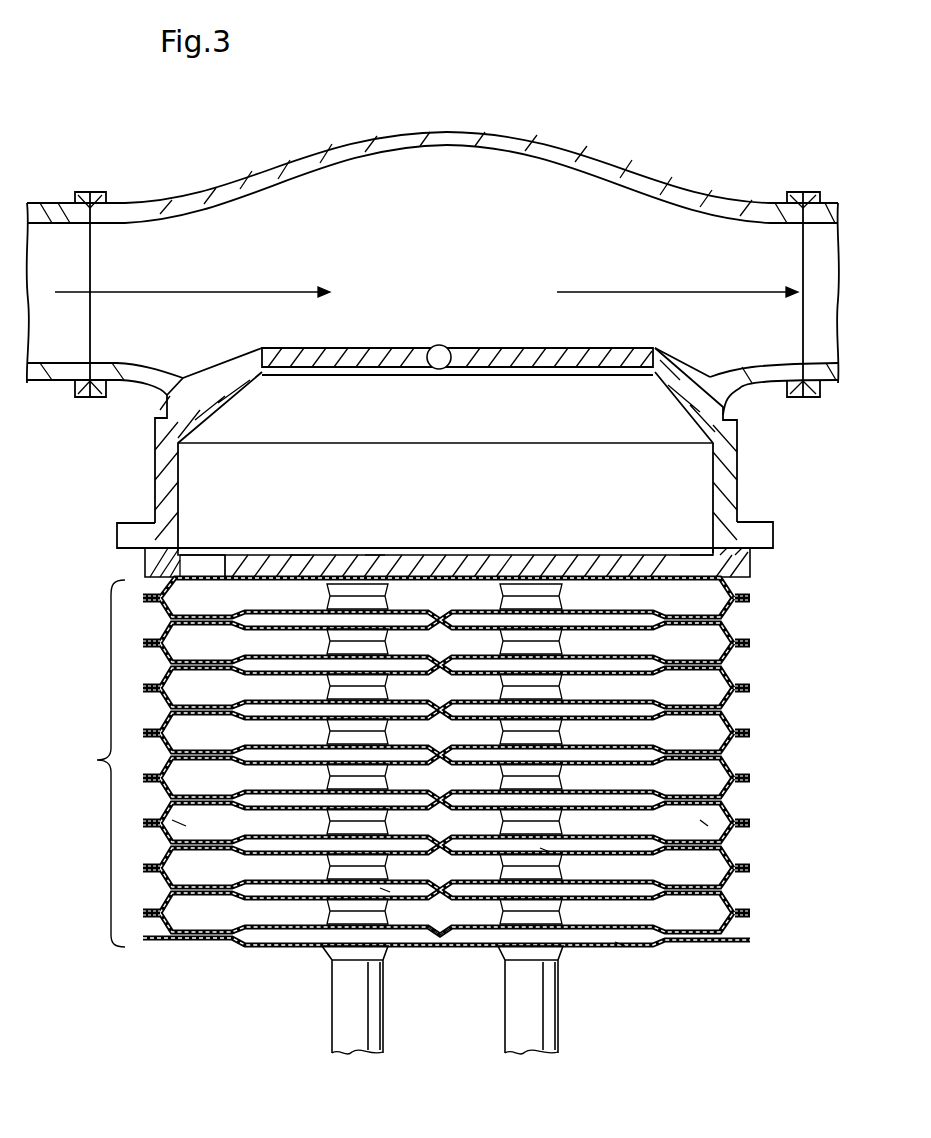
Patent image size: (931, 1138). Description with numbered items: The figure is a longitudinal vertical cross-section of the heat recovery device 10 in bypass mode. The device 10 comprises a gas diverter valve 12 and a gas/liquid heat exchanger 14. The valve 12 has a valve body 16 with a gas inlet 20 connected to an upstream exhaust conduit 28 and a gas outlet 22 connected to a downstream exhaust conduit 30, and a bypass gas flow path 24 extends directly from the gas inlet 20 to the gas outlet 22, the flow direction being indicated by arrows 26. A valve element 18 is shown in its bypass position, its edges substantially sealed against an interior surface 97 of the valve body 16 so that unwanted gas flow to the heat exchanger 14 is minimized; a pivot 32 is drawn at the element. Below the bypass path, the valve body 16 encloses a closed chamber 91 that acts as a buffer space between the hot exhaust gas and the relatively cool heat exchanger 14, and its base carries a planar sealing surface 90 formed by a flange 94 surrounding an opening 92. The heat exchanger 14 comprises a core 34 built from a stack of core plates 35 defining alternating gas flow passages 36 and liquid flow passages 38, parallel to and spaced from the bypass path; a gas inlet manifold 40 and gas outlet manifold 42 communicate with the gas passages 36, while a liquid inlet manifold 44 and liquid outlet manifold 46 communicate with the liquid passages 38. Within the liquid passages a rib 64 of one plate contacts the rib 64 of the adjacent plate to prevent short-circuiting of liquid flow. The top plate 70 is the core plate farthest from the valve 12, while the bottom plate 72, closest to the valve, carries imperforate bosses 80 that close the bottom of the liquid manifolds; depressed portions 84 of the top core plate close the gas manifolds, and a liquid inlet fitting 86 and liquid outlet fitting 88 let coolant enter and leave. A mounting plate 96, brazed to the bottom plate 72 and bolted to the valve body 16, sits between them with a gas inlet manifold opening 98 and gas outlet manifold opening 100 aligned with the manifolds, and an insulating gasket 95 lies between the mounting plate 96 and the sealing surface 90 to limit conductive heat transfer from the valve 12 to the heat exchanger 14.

The heat recovery device 10 is at (537, 110).
The gas diverter valve 12 is at (448, 131).
The gas/liquid heat exchanger 14 is at (454, 780).
The valve body 16 is at (645, 154).
The valve element 18 is at (388, 347).
The gas inlet 20 is at (100, 262).
The gas outlet 22 is at (777, 257).
The bypass gas flow path 24 is at (432, 213).
The arrows 26 is at (206, 291).
The upstream exhaust conduit 28 is at (56, 202).
The downstream exhaust conduit 30 is at (821, 192).
The pivot 32 is at (440, 369).
The heat exchanger core 34 is at (94, 763).
The core plates 35 is at (748, 655).
The gas flow passages 36 is at (647, 753).
The liquid flow passages 38 is at (186, 666).
The gas inlet manifold 40 is at (186, 826).
The gas outlet manifold 42 is at (706, 824).
The liquid inlet manifold 44 is at (386, 892).
The liquid outlet manifold 46 is at (546, 851).
The rib 64 is at (446, 936).
The top plate 70 is at (621, 946).
The bottom plate 72 is at (152, 578).
The imperforate bosses 80 is at (378, 596).
The depressed portions 84 is at (190, 940).
The liquid inlet fitting 86 is at (334, 1015).
The liquid outlet fitting 88 is at (507, 1015).
The sealing surface 90 is at (772, 550).
The closed chamber 91 is at (503, 482).
The opening 92 is at (167, 483).
The flange 94 is at (122, 520).
The gasket 95 is at (375, 555).
The mounting plate 96 is at (300, 555).
The interior surface 97 is at (668, 362).
The gas inlet manifold opening 98 is at (207, 562).
The gas outlet manifold opening 100 is at (697, 566).